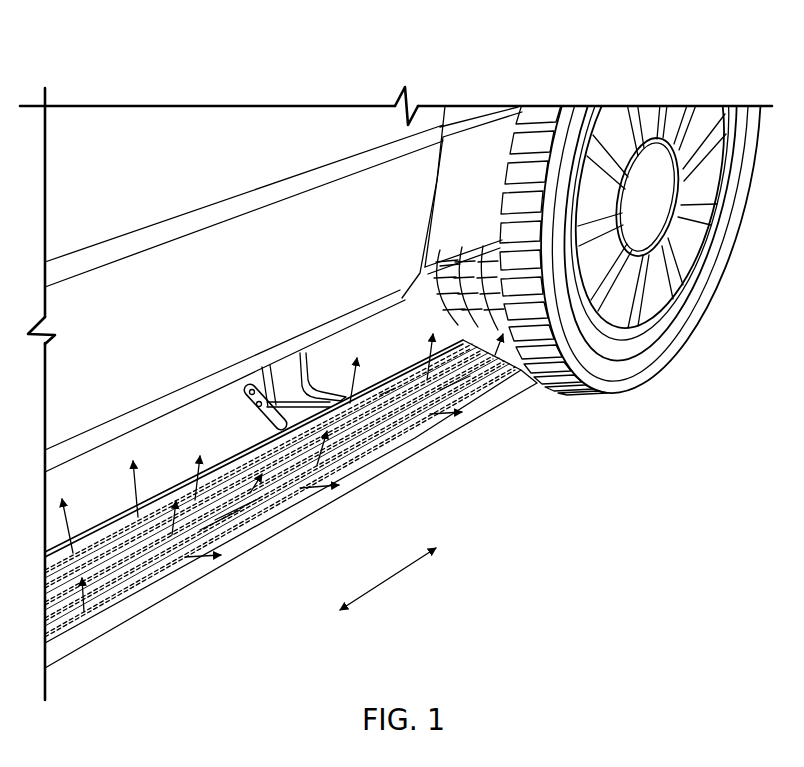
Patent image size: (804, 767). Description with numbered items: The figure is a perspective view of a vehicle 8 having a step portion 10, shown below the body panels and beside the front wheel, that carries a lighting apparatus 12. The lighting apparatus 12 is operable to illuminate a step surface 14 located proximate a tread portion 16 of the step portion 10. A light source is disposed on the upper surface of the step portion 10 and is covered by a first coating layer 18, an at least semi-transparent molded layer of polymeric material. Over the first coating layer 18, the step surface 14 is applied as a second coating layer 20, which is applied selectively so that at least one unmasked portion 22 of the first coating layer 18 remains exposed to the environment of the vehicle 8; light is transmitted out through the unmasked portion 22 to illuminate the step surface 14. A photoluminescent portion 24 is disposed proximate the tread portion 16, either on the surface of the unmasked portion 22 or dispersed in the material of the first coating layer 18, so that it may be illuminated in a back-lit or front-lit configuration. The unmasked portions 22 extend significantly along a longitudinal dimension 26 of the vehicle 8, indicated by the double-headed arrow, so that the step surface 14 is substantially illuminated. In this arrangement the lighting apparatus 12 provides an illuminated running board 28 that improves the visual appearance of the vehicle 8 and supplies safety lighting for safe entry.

The vehicle 8 is at (521, 65).
The step portion 10 is at (292, 525).
The lighting apparatus 12 is at (579, 419).
The step surface 14 is at (242, 467).
The tread portion 16 is at (97, 534).
The first coating layer 18 is at (218, 524).
The second coating layer 20 is at (230, 523).
The unmasked portion 22 is at (380, 397).
The photoluminescent portion 24 is at (458, 388).
The longitudinal dimension 26 is at (398, 586).
The running board 28 is at (95, 631).